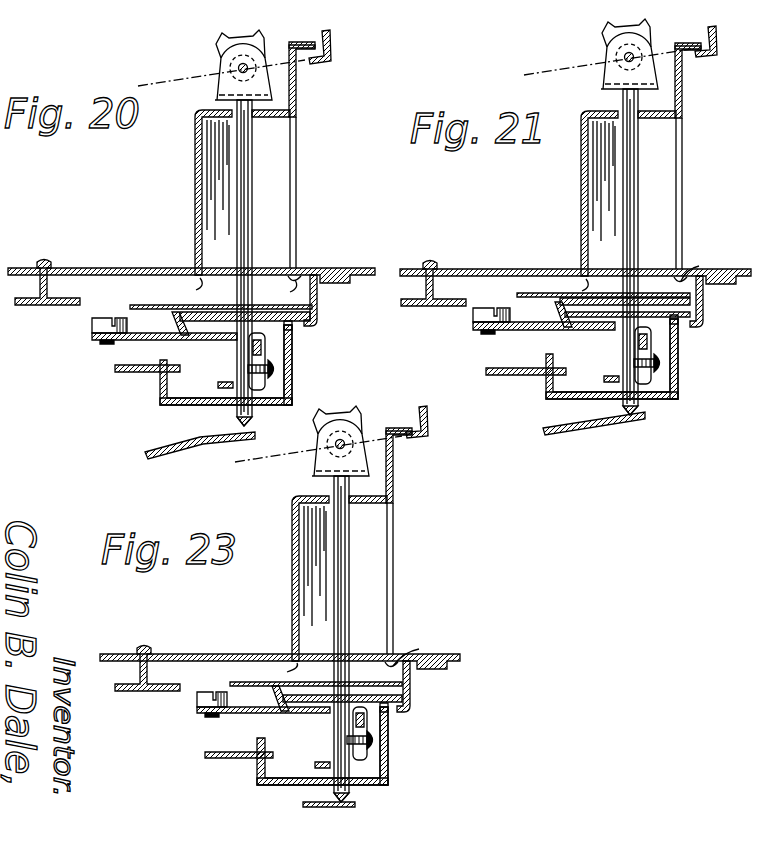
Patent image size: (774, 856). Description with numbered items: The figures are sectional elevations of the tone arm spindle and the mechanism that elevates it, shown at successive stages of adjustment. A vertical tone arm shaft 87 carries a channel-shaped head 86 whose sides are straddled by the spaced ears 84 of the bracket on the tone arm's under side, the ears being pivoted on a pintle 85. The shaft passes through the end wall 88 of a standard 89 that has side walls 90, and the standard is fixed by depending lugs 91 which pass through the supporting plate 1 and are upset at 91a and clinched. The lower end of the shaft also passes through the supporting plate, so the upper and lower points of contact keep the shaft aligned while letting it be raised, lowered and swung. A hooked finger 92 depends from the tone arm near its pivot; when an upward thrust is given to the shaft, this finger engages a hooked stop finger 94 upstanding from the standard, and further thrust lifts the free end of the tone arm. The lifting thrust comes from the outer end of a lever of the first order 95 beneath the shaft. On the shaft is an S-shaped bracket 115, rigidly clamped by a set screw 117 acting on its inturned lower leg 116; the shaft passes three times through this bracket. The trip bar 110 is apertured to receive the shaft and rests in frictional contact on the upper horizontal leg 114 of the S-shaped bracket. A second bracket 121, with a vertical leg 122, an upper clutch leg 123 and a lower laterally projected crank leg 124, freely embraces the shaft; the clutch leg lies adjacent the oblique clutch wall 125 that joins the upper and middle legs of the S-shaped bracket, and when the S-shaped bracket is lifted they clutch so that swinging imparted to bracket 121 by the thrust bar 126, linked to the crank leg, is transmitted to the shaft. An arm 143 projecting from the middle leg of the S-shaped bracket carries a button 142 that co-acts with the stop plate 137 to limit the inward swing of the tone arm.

In FIG. 20, the mounting plate 1 is at (113, 268).
In FIG. 21, the mounting plate 1 is at (575, 264).
In FIG. 23, the mounting plate 1 is at (280, 649).
In FIG. 20, the spaced ears 84 is at (223, 45).
In FIG. 21, the spaced ears 84 is at (604, 33).
In FIG. 23, the spaced ears 84 is at (349, 417).
In FIG. 20, the pintle 85 is at (237, 68).
In FIG. 21, the pintle 85 is at (600, 62).
In FIG. 23, the pintle 85 is at (319, 444).
In FIG. 20, the channel-shaped head 86 is at (222, 89).
In FIG. 21, the channel-shaped head 86 is at (607, 65).
In FIG. 23, the channel-shaped head 86 is at (318, 448).
In FIG. 20, the tone arm shaft 87 is at (246, 181).
In FIG. 21, the tone arm shaft 87 is at (668, 252).
In FIG. 23, the tone arm shaft 87 is at (379, 639).
In FIG. 20, the end wall 88 is at (284, 118).
In FIG. 21, the end wall 88 is at (692, 94).
In FIG. 23, the end wall 88 is at (408, 477).
In FIG. 20, the standard 89 is at (196, 162).
In FIG. 21, the standard 89 is at (579, 193).
In FIG. 23, the standard 89 is at (295, 578).
In FIG. 20, the side walls 90 is at (284, 207).
In FIG. 21, the side walls 90 is at (692, 193).
In FIG. 23, the side walls 90 is at (403, 578).
In FIG. 20, the depending lugs 91 is at (197, 276).
In FIG. 21, the depending lugs 91 is at (616, 194).
In FIG. 23, the depending lugs 91 is at (328, 577).
In FIG. 20, the upset portion 91a is at (233, 290).
In FIG. 21, the upset portion 91a is at (636, 274).
In FIG. 23, the upset portion 91a is at (345, 654).
In FIG. 20, the hooked finger 92 is at (333, 49).
In FIG. 21, the hooked finger 92 is at (724, 41).
In FIG. 23, the hooked finger 92 is at (428, 422).
In FIG. 20, the hooked stop finger 94 is at (301, 42).
In FIG. 21, the hooked stop finger 94 is at (683, 33).
In FIG. 23, the hooked stop finger 94 is at (400, 409).
In FIG. 20, the trip bar 110 is at (156, 305).
In FIG. 21, the trip bar 110 is at (601, 309).
In FIG. 23, the trip bar 110 is at (316, 692).
In FIG. 20, the upper horizontal leg 114 is at (319, 309).
In FIG. 21, the upper horizontal leg 114 is at (654, 301).
In FIG. 23, the upper horizontal leg 114 is at (371, 686).
In FIG. 20, the S-shaped bracket 115 is at (219, 341).
In FIG. 21, the S-shaped bracket 115 is at (574, 326).
In FIG. 23, the S-shaped bracket 115 is at (291, 709).
In FIG. 20, the lower leg 116 is at (267, 346).
In FIG. 21, the lower leg 116 is at (666, 355).
In FIG. 23, the lower leg 116 is at (374, 737).
In FIG. 20, the set screw 117 is at (280, 368).
In FIG. 21, the set screw 117 is at (681, 369).
In FIG. 23, the set screw 117 is at (390, 739).
In FIG. 20, the bracket 121 is at (292, 398).
In FIG. 21, the bracket 121 is at (637, 367).
In FIG. 23, the bracket 121 is at (346, 746).
In FIG. 20, the vertical leg 122 is at (293, 378).
In FIG. 21, the vertical leg 122 is at (699, 360).
In FIG. 23, the vertical leg 122 is at (407, 746).
In FIG. 20, the upper clutch leg 123 is at (282, 322).
In FIG. 21, the upper clutch leg 123 is at (698, 333).
In FIG. 23, the upper clutch leg 123 is at (334, 727).
In FIG. 20, the crank leg 124 is at (193, 405).
In FIG. 21, the crank leg 124 is at (597, 406).
In FIG. 23, the crank leg 124 is at (322, 767).
In FIG. 20, the oblique clutch wall 125 is at (180, 331).
In FIG. 21, the oblique clutch wall 125 is at (544, 336).
In FIG. 23, the oblique clutch wall 125 is at (263, 720).
In FIG. 20, the thrust bar 126 is at (131, 373).
In FIG. 21, the thrust bar 126 is at (523, 379).
In FIG. 23, the thrust bar 126 is at (225, 766).
In FIG. 20, the stop plate 137 is at (65, 306).
In FIG. 21, the stop plate 137 is at (433, 296).
In FIG. 23, the stop plate 137 is at (145, 689).
In FIG. 20, the button 142 is at (104, 318).
In FIG. 21, the button 142 is at (486, 305).
In FIG. 23, the button 142 is at (202, 683).
In FIG. 20, the arm 143 is at (126, 342).
In FIG. 21, the arm 143 is at (488, 344).
In FIG. 23, the arm 143 is at (200, 724).
In FIG. 20, the lever of the first order 95 is at (165, 444).
In FIG. 21, the lever of the first order 95 is at (594, 434).
In FIG. 23, the lever of the first order 95 is at (301, 802).